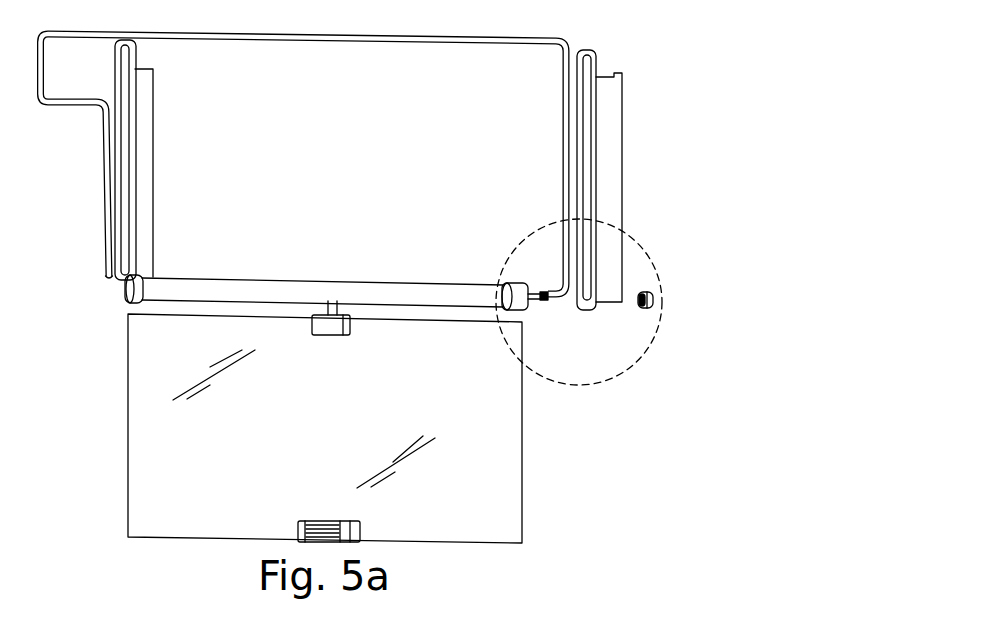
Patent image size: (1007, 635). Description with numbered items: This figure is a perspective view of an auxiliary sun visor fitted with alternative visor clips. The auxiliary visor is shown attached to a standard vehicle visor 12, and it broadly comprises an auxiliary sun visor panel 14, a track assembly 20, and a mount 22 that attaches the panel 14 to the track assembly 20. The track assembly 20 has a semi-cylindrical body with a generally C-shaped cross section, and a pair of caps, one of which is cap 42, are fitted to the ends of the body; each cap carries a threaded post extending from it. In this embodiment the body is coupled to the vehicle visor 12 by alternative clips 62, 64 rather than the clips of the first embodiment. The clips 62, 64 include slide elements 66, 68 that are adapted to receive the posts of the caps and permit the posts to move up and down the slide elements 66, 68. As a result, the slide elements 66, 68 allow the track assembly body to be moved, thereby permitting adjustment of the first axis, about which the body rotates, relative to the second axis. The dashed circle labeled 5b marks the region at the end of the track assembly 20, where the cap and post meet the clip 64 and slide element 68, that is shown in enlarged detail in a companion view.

The standard vehicle visor 12 is at (340, 108).
The auxiliary sun visor panel 14 is at (508, 513).
The track assembly 20 is at (327, 272).
The mount 22 is at (328, 325).
The cap 42 is at (128, 293).
The alternative clip 62 is at (100, 82).
The alternative clip 64 is at (634, 140).
The slide element 66 is at (120, 222).
The slide element 68 is at (584, 76).
The detail view circle 5b is at (647, 253).